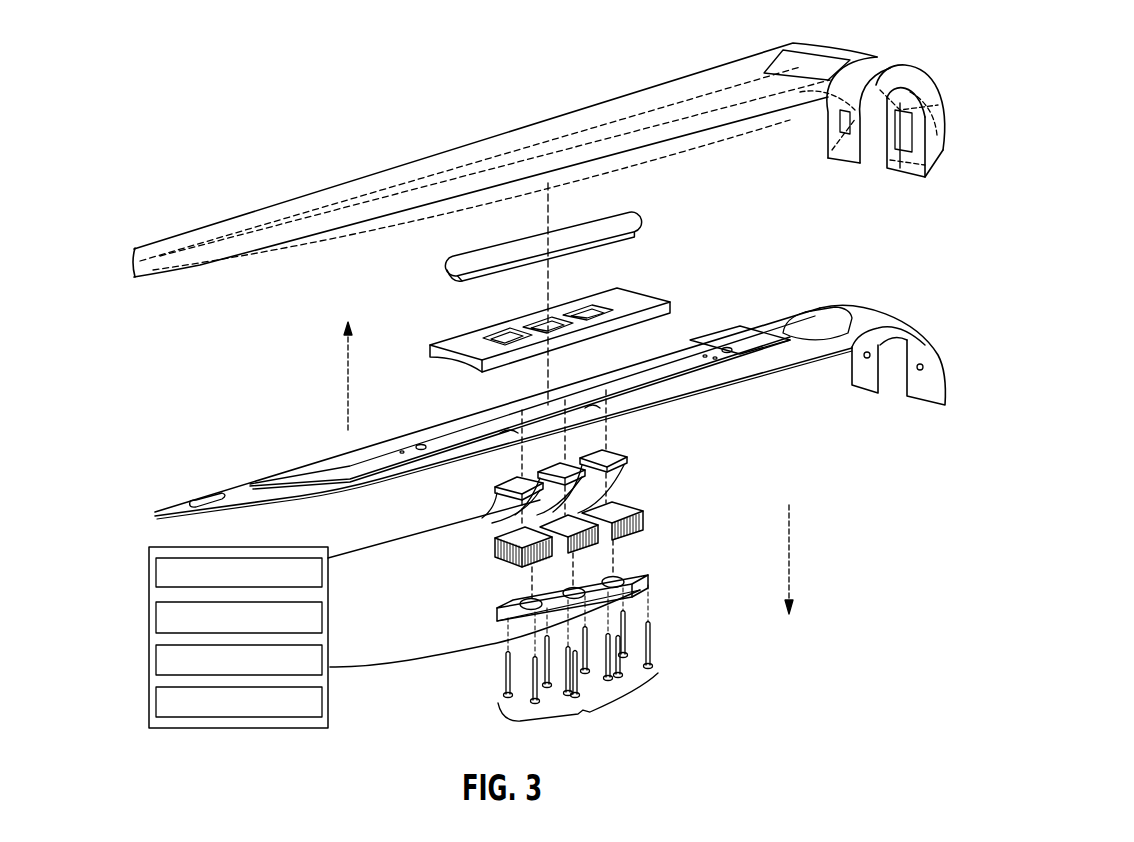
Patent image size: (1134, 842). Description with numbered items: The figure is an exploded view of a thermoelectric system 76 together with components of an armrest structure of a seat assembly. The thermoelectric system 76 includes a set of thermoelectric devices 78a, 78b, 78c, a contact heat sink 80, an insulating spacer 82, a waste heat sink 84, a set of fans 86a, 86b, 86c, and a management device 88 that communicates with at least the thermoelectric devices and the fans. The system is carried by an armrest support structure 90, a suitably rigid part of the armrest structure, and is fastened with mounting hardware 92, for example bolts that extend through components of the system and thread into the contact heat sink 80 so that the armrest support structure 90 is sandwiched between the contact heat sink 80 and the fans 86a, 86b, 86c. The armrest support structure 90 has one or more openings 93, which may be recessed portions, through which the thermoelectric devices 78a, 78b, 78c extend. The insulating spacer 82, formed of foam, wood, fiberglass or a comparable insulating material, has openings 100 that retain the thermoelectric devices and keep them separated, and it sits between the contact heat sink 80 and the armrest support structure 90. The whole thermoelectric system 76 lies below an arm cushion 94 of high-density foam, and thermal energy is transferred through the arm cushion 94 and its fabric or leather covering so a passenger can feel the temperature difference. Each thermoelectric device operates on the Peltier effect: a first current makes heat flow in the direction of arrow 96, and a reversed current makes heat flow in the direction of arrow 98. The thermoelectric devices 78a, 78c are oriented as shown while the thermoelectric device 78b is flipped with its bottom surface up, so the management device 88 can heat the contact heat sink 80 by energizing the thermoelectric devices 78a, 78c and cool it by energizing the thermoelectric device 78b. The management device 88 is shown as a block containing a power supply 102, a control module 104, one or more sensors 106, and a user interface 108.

The thermoelectric system 76 is at (320, 327).
The thermoelectric device 78a is at (500, 478).
The thermoelectric device 78b is at (603, 440).
The thermoelectric device 78c is at (623, 441).
The contact heat sink 80 is at (626, 219).
The insulating spacer 82 is at (637, 293).
The waste heat sink 84 is at (493, 547).
The fan 86a is at (637, 568).
The fan 86b is at (577, 582).
The fan 86c is at (510, 602).
The management device 88 is at (160, 545).
The armrest support structure 90 is at (922, 350).
The mounting hardware 92 is at (578, 669).
The openings 93 is at (527, 413).
The arm cushion 94 is at (935, 90).
The arrow 96 is at (343, 368).
The arrow 98 is at (790, 543).
The openings 100 is at (547, 328).
The power supply 102 is at (153, 566).
The control module 104 is at (153, 617).
The sensors 106 is at (153, 660).
The user interface 108 is at (153, 703).